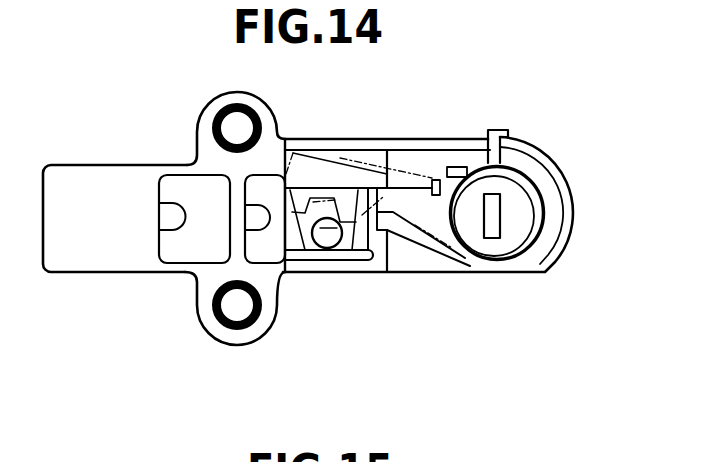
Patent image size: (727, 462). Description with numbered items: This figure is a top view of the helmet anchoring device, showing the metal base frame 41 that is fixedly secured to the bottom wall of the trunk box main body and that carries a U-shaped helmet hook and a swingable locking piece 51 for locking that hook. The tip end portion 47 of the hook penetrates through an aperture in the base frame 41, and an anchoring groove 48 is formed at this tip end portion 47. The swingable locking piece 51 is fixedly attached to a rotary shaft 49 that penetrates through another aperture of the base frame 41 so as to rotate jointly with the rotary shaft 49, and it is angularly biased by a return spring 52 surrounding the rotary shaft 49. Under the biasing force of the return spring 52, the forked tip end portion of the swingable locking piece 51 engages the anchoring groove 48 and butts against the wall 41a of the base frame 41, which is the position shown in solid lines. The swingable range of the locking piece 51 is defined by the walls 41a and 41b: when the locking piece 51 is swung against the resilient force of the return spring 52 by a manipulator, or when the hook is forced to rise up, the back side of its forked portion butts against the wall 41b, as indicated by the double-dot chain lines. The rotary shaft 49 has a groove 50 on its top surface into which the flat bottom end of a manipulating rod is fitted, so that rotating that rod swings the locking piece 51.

The base frame 41 is at (111, 287).
The wall 41a is at (355, 253).
The wall 41b is at (363, 140).
The tip end portion 47 is at (319, 252).
The anchoring groove 48 is at (325, 228).
The rotary shaft 49 is at (508, 258).
The groove 50 is at (500, 219).
The swingable locking piece 51 is at (428, 247).
The return spring 52 is at (497, 130).